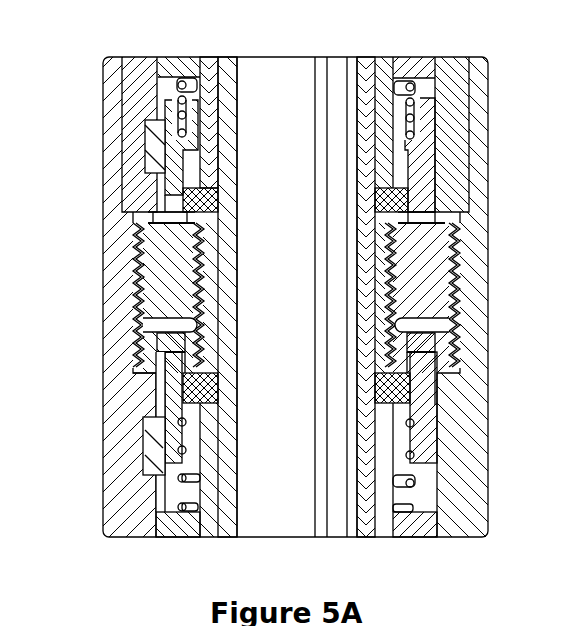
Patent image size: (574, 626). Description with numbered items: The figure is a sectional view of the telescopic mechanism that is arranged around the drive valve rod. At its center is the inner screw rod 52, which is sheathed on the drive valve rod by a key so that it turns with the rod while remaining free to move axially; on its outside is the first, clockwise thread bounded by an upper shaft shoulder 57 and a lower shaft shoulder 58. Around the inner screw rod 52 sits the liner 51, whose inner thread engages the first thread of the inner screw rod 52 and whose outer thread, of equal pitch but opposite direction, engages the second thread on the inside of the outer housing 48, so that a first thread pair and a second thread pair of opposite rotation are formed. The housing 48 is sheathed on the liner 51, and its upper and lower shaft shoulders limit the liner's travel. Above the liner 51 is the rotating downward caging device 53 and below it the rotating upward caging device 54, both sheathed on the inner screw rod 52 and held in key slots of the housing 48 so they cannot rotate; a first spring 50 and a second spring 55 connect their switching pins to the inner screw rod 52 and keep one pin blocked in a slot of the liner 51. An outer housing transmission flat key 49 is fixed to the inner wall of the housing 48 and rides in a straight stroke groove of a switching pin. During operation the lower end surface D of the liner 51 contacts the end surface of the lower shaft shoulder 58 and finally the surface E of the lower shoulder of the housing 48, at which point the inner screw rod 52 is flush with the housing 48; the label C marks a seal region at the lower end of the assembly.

The outer housing 48 is at (122, 133).
The outer housing transmission flat key 49 is at (157, 137).
The first spring 50 is at (182, 115).
The liner 51 is at (172, 250).
The inner screw rod 52 is at (228, 153).
The rotating downward caging device 53 is at (423, 150).
The rotating upward caging device 54 is at (401, 413).
The second spring 55 is at (182, 478).
The upper shaft shoulder 57 is at (398, 195).
The lower shaft shoulder 58 is at (395, 390).
The lower end surface of the liner D is at (148, 332).
The surface of the lower shaft shoulder of the outer housing E is at (142, 375).
The seal C is at (193, 375).